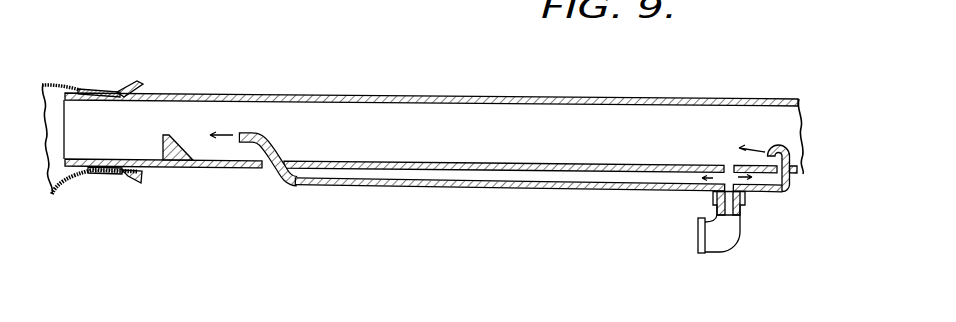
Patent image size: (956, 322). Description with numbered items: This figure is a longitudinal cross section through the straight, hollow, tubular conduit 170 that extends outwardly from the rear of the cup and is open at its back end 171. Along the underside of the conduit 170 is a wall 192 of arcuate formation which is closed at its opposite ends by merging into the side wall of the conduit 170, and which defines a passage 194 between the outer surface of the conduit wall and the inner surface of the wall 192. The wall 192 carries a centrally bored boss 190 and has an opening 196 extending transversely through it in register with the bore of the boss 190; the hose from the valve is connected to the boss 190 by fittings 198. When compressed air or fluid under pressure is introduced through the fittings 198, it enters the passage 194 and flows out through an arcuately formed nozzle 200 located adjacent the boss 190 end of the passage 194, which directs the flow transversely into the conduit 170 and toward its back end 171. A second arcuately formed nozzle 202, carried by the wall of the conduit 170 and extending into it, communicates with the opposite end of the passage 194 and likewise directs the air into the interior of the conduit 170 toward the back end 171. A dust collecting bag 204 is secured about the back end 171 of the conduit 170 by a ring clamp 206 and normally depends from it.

The conduit 170 is at (485, 97).
The open end 171 is at (87, 89).
The boss 190 is at (713, 197).
The wall 192 is at (494, 193).
The passage 194 is at (383, 182).
The opening 196 is at (727, 181).
The fittings 198 is at (727, 244).
The nozzle 200 is at (771, 147).
The second nozzle 202 is at (268, 137).
The dust collecting bag 204 is at (47, 83).
The ring clamp 206 is at (116, 88).